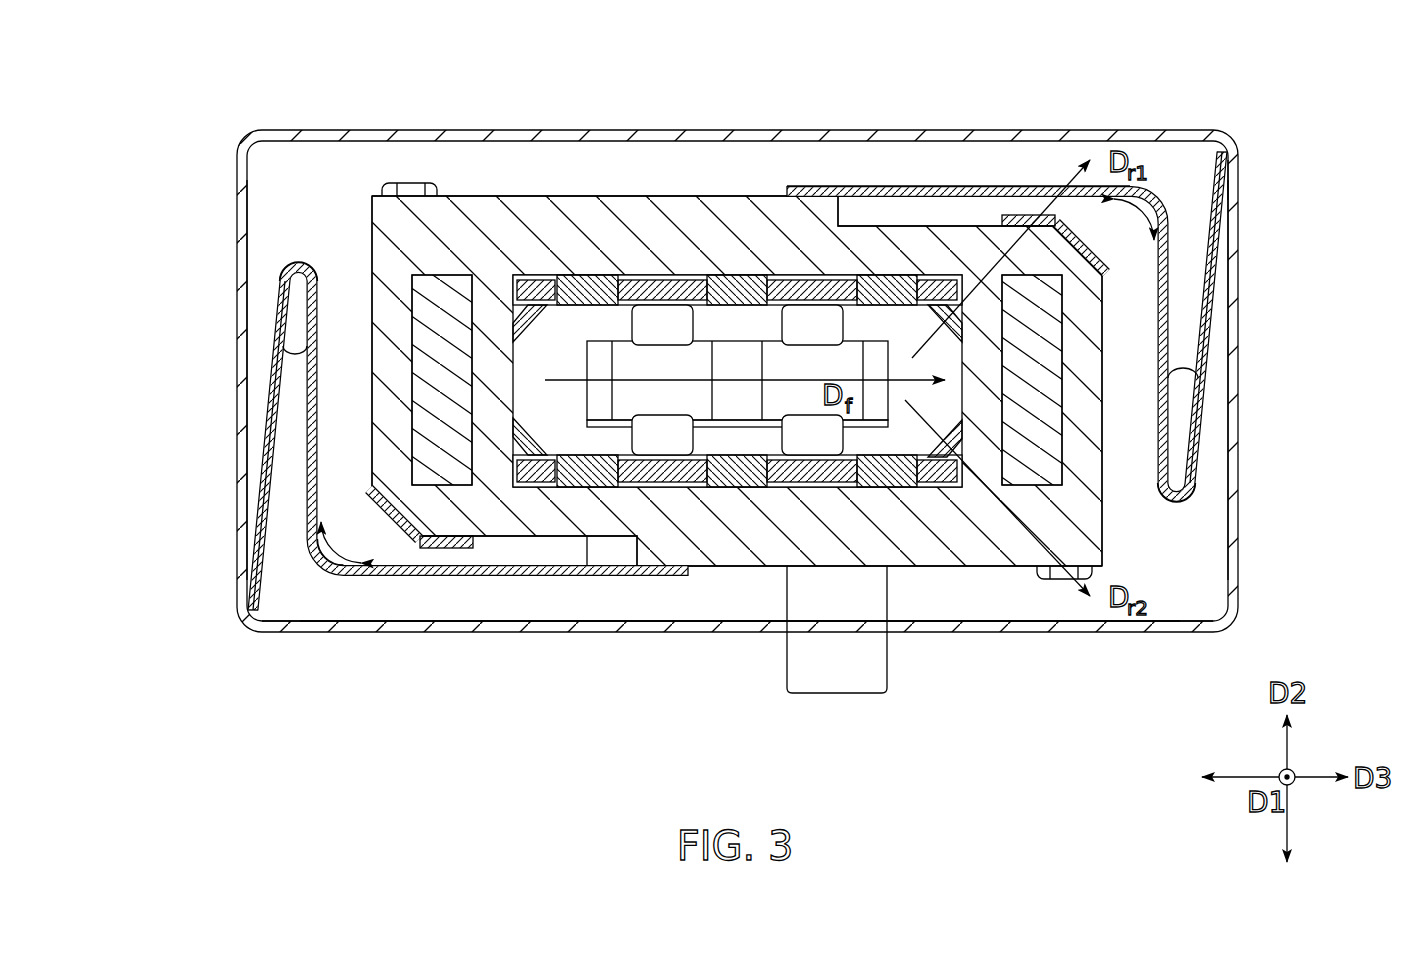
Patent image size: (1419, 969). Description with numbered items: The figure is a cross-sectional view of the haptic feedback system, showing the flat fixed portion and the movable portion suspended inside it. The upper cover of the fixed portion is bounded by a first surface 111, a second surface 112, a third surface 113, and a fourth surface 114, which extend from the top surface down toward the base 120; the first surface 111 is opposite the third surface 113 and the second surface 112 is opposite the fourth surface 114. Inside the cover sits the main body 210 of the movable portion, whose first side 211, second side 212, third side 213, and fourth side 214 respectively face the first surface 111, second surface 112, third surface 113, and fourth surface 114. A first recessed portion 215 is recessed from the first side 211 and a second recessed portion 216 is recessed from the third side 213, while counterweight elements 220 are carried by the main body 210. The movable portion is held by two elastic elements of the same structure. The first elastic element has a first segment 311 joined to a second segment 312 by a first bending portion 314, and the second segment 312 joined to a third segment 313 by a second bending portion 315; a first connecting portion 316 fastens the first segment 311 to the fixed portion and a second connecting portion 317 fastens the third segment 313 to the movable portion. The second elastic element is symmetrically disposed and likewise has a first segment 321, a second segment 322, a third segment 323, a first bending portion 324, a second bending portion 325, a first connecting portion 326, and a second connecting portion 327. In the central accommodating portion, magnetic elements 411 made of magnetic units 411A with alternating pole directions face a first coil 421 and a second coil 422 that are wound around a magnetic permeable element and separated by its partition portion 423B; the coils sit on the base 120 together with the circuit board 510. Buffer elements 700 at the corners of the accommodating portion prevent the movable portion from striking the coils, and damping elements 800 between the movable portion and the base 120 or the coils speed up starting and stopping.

The first surface 111 is at (700, 632).
The second surface 112 is at (242, 295).
The third surface 113 is at (736, 130).
The fourth surface 114 is at (1240, 376).
The base 120 is at (330, 605).
The main body 210 is at (985, 545).
The first side 211 is at (740, 566).
The second side 212 is at (372, 335).
The third side 213 is at (672, 196).
The fourth side 214 is at (1102, 400).
The first recessed portion 215 is at (560, 540).
The second recessed portion 216 is at (858, 186).
The counterweight element 220 is at (430, 430).
The first segment 311 is at (1205, 330).
The second segment 312 is at (1169, 280).
The third segment 313 is at (958, 290).
The first bending portion 314 is at (1180, 500).
The second bending portion 315 is at (1220, 155).
The first connecting portion 316 is at (1232, 165).
The second connecting portion 317 is at (790, 186).
The first segment 321 is at (268, 392).
The second segment 322 is at (306, 437).
The third segment 323 is at (482, 548).
The first bending portion 324 is at (296, 260).
The second bending portion 325 is at (320, 570).
The first connecting portion 326 is at (247, 600).
The second connecting portion 327 is at (682, 576).
The magnetic element 411 is at (870, 210).
The magnetic unit 411A is at (940, 275).
The first coil 421 is at (612, 368).
The second coil 422 is at (852, 365).
The partition portion 423B is at (700, 352).
The circuit board 510 is at (838, 695).
The buffer element 700 is at (515, 318).
The damping element 800 is at (408, 183).